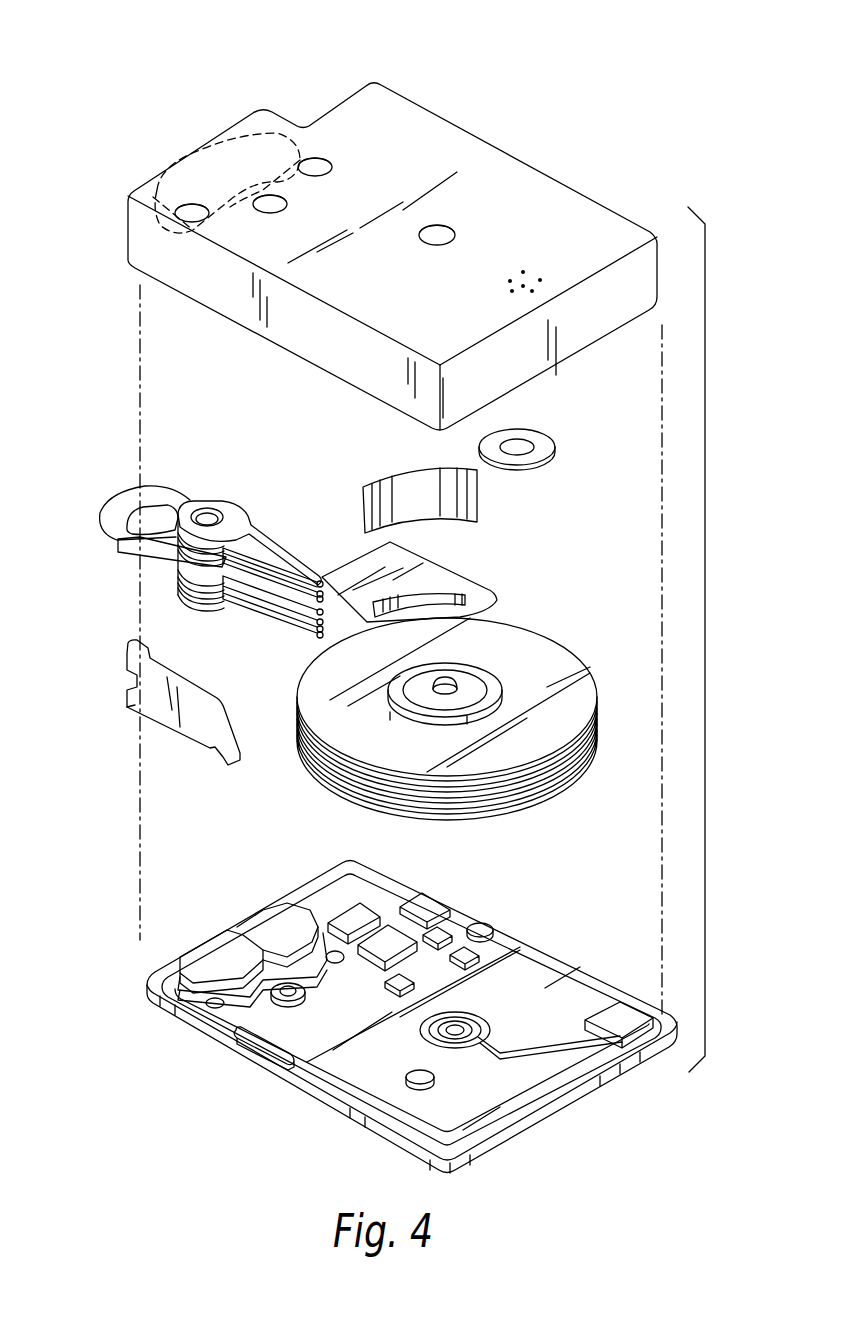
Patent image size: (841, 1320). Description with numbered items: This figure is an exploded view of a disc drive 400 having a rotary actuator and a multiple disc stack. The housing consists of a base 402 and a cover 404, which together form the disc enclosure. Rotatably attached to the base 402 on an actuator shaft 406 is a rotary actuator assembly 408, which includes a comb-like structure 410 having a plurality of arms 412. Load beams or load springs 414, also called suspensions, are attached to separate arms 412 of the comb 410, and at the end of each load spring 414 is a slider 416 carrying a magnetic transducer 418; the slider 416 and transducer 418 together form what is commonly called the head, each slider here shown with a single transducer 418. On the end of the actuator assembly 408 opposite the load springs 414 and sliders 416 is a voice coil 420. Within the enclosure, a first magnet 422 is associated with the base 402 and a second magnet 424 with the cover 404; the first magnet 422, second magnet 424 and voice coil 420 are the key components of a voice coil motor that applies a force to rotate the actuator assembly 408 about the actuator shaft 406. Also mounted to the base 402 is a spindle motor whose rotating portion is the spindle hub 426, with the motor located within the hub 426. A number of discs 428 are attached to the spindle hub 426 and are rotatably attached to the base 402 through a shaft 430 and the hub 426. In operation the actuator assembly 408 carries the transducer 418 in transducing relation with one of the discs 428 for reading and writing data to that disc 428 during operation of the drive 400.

The disc drive 400 is at (568, 33).
The base 402 is at (572, 983).
The cover 404 is at (548, 197).
The actuator shaft 406 is at (210, 507).
The rotary actuator assembly 408 is at (158, 558).
The comb-like structure 410 is at (227, 610).
The arms 412 is at (256, 527).
The load springs 414 is at (277, 550).
The slider 416 is at (320, 575).
The magnetic transducer 418 is at (332, 583).
The voice coil 420 is at (118, 512).
The first magnet 422 is at (207, 950).
The second magnet 424 is at (230, 143).
The spindle hub 426 is at (490, 682).
The discs 428 is at (565, 666).
The shaft 430 is at (453, 678).